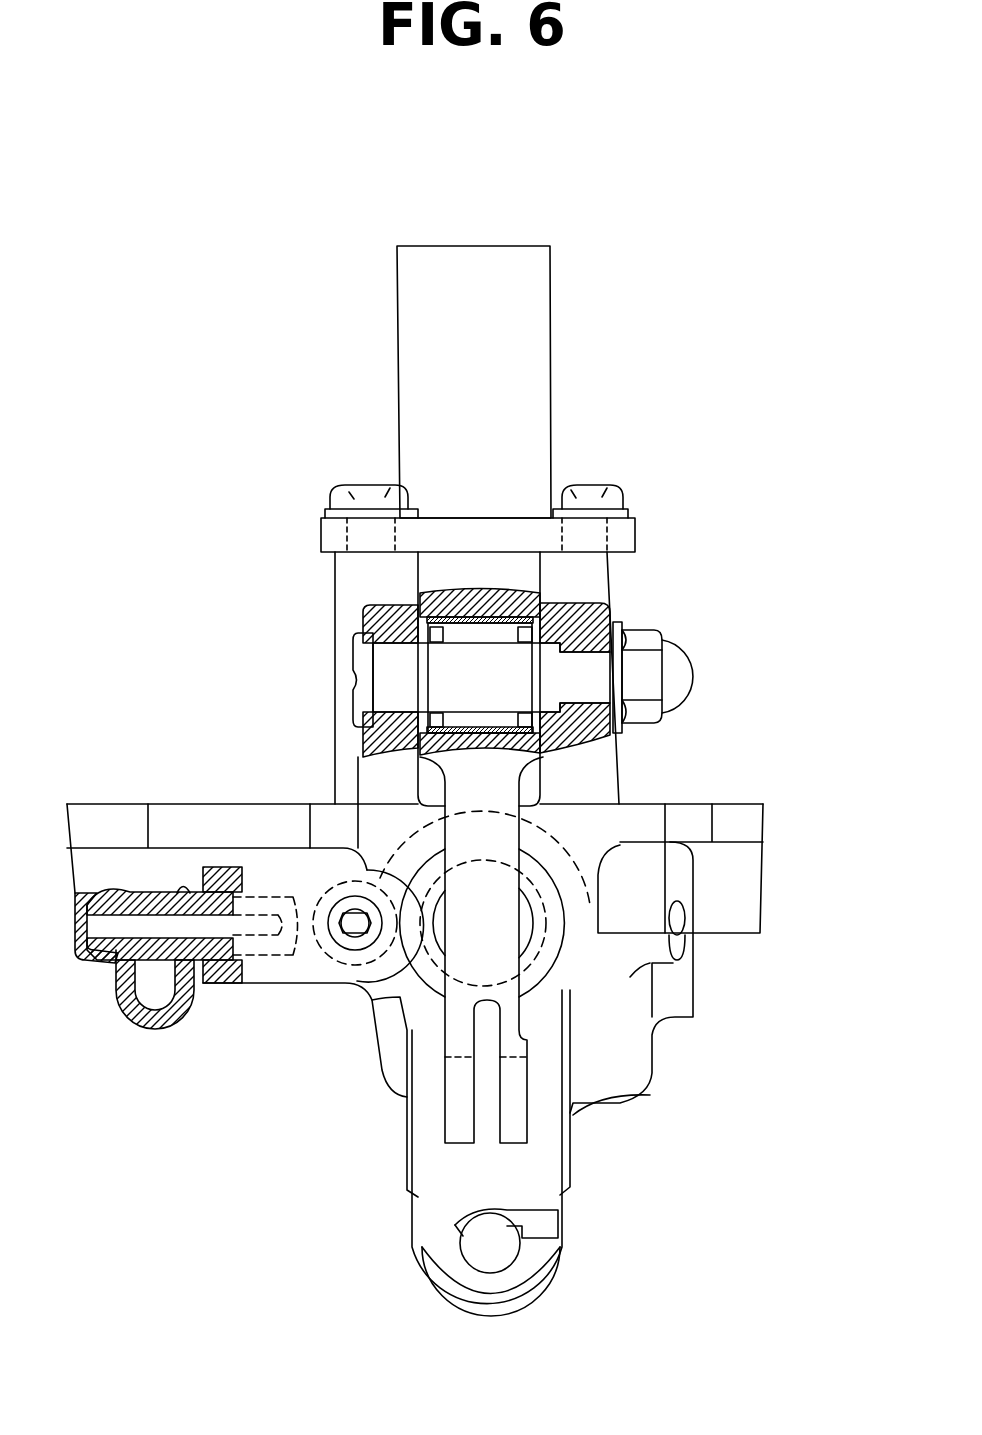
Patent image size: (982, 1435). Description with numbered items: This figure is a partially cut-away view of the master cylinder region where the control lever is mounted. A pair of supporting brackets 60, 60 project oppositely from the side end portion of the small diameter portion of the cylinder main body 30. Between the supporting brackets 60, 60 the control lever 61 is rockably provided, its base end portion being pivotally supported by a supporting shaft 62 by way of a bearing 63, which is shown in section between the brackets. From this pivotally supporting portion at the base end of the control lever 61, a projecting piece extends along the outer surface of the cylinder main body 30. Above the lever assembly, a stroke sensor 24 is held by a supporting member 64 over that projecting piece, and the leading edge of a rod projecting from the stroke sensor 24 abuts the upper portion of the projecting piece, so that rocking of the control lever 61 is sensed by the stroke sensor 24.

The stroke sensor 24 is at (551, 363).
The cylinder main body 30 is at (587, 977).
The supporting bracket 60 is at (362, 738).
The control lever 61 is at (477, 953).
The supporting shaft 62 is at (700, 668).
The bearing 63 is at (527, 629).
The supporting member 64 is at (335, 591).